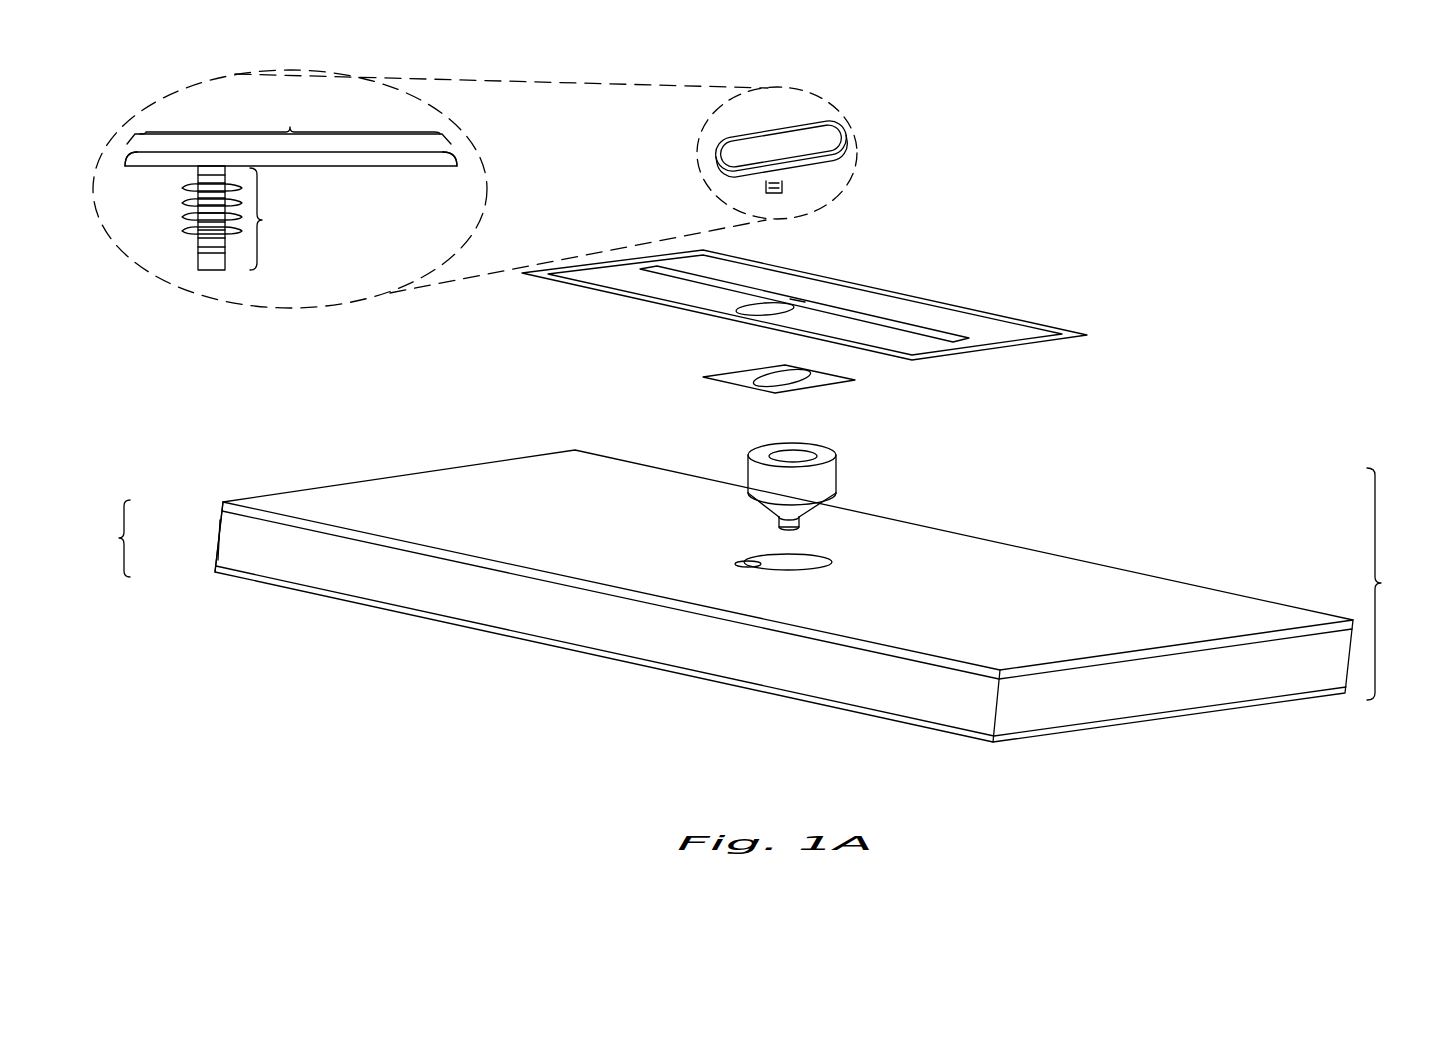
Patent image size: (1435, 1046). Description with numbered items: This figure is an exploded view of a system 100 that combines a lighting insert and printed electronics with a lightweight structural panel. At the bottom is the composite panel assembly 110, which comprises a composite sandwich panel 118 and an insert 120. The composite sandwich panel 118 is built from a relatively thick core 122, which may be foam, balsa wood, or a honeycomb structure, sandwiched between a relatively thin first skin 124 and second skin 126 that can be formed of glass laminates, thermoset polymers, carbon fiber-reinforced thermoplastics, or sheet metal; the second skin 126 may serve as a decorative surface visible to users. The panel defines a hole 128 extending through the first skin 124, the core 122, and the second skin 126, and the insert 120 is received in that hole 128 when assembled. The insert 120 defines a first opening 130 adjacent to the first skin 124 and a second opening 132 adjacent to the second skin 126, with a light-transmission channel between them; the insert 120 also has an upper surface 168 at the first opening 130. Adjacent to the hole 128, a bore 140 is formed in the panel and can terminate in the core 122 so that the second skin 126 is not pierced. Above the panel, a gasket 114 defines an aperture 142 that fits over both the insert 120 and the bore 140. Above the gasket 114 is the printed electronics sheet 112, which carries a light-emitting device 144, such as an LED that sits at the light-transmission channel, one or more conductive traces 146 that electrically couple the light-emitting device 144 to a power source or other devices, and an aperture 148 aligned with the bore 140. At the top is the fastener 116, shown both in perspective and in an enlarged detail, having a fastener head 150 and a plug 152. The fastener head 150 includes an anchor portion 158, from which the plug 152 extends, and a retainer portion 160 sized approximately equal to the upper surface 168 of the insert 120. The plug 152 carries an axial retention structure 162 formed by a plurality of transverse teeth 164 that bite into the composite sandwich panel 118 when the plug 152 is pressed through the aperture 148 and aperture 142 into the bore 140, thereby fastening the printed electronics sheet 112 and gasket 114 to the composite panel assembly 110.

The system 100 is at (1185, 212).
The composite panel assembly 110 is at (816, 596).
The printed electronics sheet 112 is at (1067, 333).
The gasket 114 is at (832, 380).
The fastener 116 is at (813, 138).
The composite sandwich panel 118 is at (155, 538).
The insert 120 is at (811, 480).
The core 122 is at (222, 536).
The first skin 124 is at (223, 503).
The second skin 126 is at (217, 570).
The hole 128 is at (822, 557).
The first opening 130 is at (777, 450).
The second opening 132 is at (780, 528).
The bore 140 is at (760, 567).
The aperture 142 is at (720, 383).
The light-emitting device 144 is at (797, 302).
The conductive traces 146 is at (937, 328).
The aperture 148 is at (733, 318).
The fastener head 150 is at (291, 133).
The plug 152 is at (187, 248).
The anchor portion 158 is at (152, 167).
The retainer portion 160 is at (396, 167).
The axial retention structure 162 is at (168, 231).
The teeth 164 is at (190, 233).
The upper surface 168 is at (832, 456).